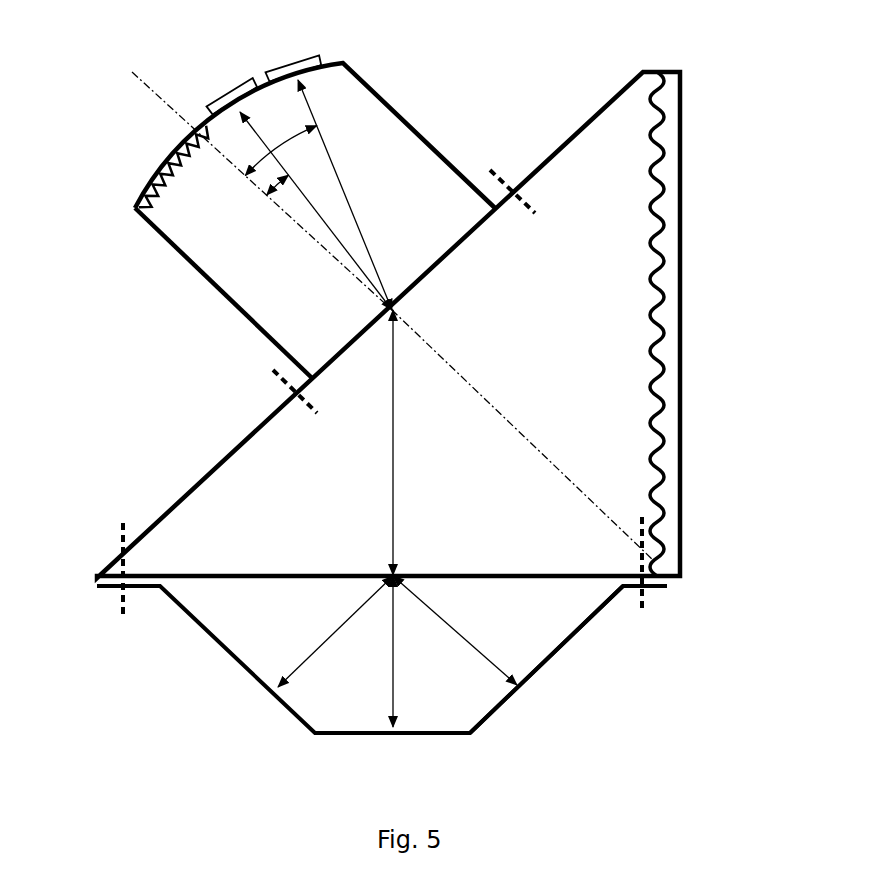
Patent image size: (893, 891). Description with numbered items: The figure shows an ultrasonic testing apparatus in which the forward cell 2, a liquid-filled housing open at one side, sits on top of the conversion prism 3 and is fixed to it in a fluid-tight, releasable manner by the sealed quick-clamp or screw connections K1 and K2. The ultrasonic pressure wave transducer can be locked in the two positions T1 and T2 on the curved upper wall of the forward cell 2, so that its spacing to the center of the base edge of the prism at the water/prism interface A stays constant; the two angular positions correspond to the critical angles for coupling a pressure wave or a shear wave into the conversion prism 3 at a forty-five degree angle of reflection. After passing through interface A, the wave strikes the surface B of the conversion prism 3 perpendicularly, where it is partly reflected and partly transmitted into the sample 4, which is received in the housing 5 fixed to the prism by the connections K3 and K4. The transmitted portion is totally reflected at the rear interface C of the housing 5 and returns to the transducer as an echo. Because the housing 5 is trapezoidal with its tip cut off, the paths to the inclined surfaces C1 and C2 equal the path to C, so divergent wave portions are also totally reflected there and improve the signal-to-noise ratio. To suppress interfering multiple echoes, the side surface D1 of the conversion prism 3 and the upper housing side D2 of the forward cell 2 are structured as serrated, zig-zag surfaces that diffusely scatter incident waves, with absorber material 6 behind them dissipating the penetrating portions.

The forward cell 2 is at (315, 220).
The conversion prism 3 is at (388, 325).
The sample 4 is at (382, 659).
The housing 5 is at (579, 638).
The absorber 6 is at (418, 324).
The transducer position T1 is at (230, 88).
The transducer position T2 is at (294, 57).
The structured surface on the side of the conversion prism D1 is at (689, 324).
The serrated surface of the upper housing side of the forward cell D2 is at (170, 167).
The quick-clamp connection or screw connection K1 is at (284, 398).
The quick-clamp connection or screw connection K2 is at (541, 162).
The connection of housing to conversion prism K3 is at (107, 572).
The connection of housing to conversion prism K4 is at (660, 566).
The water/prism interface A is at (326, 221).
The surface of the conversion prism B is at (408, 442).
The rear interface of the housing C is at (401, 668).
The surface of the housing C1 is at (317, 648).
The surface of the housing C2 is at (472, 643).